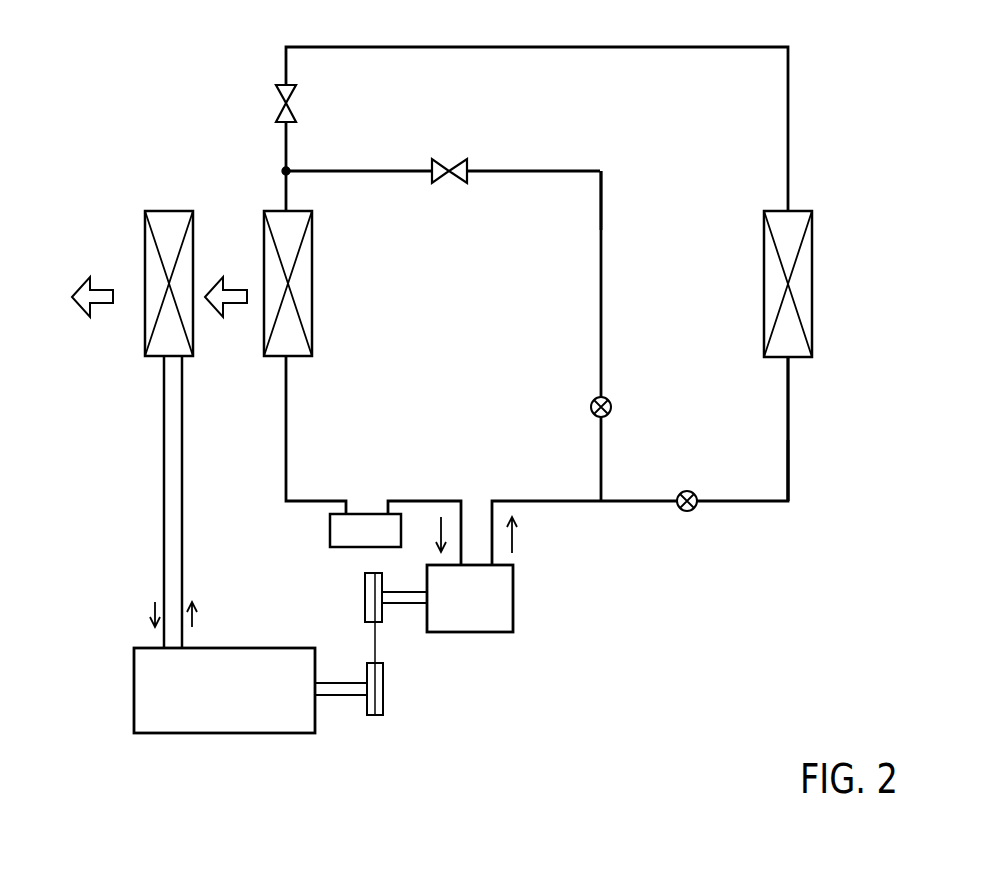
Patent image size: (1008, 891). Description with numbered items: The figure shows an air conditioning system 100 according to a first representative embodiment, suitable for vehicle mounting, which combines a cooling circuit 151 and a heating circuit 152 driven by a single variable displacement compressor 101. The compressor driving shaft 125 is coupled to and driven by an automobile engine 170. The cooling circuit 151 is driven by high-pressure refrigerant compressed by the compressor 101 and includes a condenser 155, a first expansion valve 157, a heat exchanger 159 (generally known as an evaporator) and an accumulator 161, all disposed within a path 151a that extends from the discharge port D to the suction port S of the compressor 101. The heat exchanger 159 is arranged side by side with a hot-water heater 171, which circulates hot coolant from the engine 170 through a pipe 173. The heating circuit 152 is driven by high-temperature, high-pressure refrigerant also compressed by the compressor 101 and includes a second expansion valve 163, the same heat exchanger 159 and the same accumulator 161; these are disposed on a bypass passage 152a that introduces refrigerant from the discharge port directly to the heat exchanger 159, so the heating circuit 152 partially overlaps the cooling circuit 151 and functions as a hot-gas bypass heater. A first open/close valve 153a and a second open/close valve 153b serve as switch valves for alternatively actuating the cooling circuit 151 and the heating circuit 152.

The air conditioning system 100 is at (738, 617).
The variable displacement compressor 101 is at (513, 610).
The compressor driving shaft 125 is at (404, 605).
The cooling circuit 151 is at (789, 413).
The path 151a is at (789, 460).
The heating circuit 152 is at (601, 288).
The bypass passage 152a is at (601, 218).
The first open/close valve 153a is at (688, 511).
The second open/close valve 153b is at (612, 407).
The condenser 155 is at (813, 258).
The first expansion valve 157 is at (276, 94).
The heat exchanger 159 is at (312, 252).
The accumulator 161 is at (365, 528).
The second expansion valve 163 is at (463, 160).
The automobile engine 170 is at (143, 705).
The hot-water heater 171 is at (171, 210).
The pipe 173 is at (183, 455).